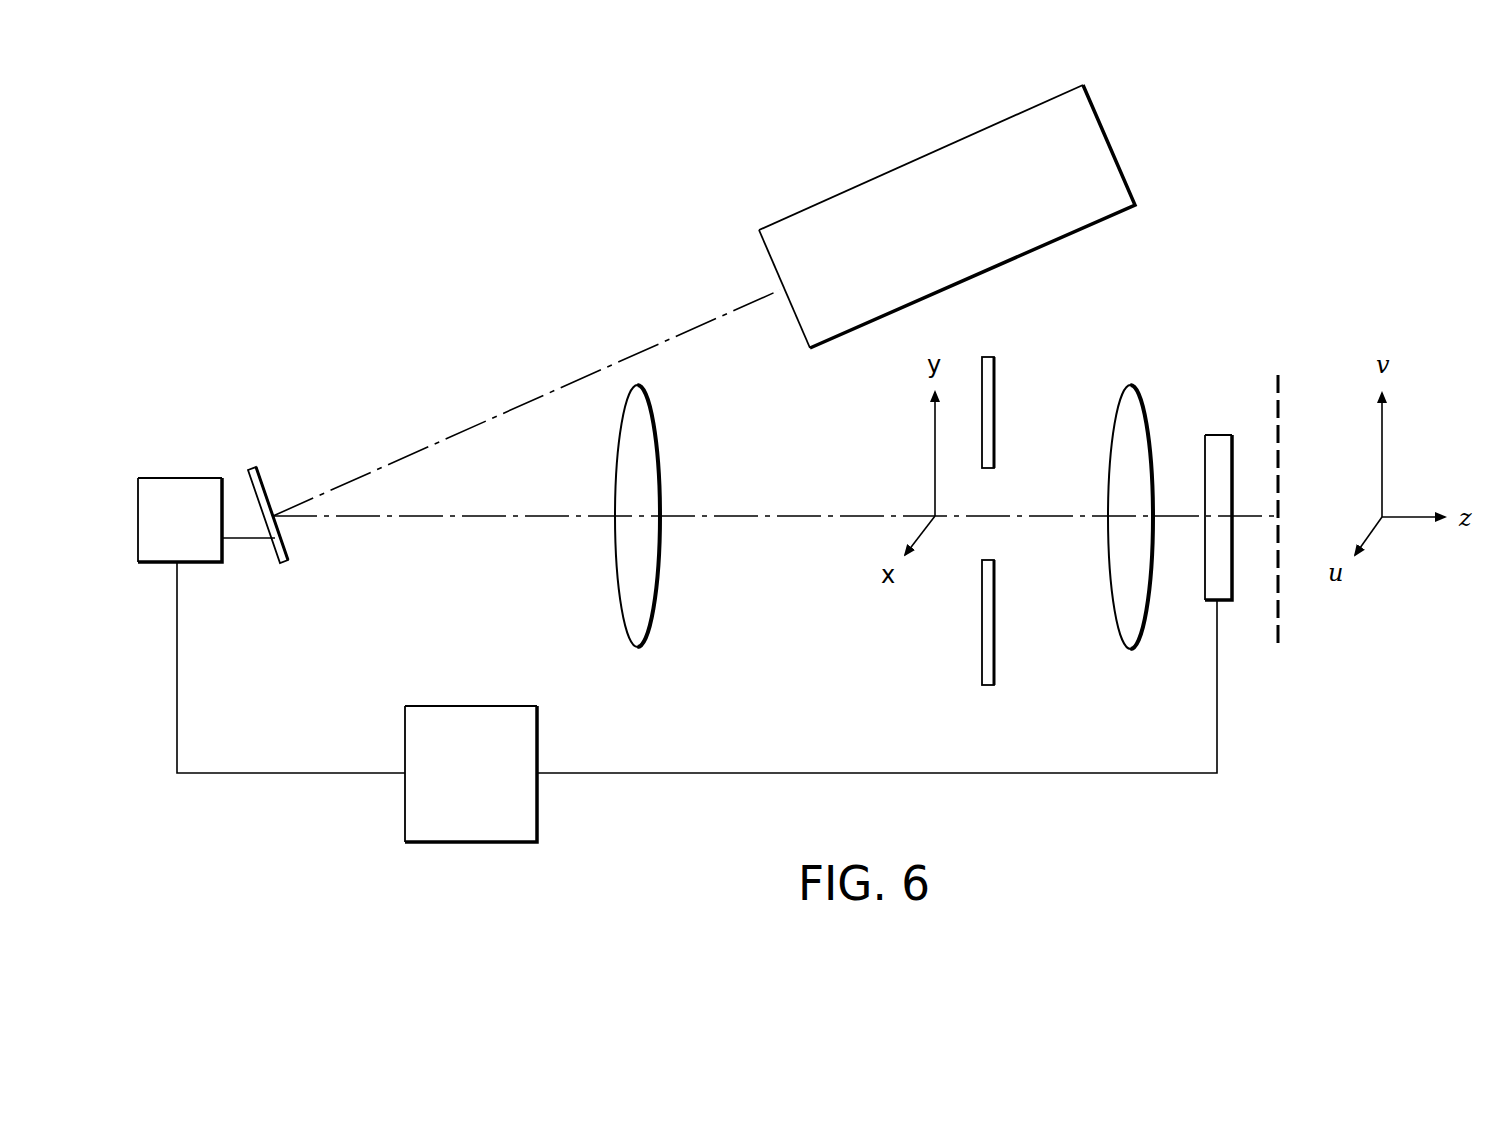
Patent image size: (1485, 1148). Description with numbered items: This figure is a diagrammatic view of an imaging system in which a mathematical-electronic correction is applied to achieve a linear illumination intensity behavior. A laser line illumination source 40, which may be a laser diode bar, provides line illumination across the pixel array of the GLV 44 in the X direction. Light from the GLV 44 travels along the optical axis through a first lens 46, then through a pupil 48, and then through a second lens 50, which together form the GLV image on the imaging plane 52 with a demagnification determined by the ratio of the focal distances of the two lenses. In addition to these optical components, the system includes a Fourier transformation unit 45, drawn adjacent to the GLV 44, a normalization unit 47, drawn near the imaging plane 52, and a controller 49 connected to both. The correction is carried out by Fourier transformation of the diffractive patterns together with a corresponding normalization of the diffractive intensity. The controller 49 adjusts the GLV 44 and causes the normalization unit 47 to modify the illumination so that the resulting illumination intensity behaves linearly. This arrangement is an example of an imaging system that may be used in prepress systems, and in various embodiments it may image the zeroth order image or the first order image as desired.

The laser line illumination source 40 is at (890, 168).
The GLV 44 is at (263, 482).
The Fourier transformation unit 45 is at (178, 478).
The first lens 46 is at (658, 430).
The normalization unit 47 is at (1203, 578).
The pupil 48 is at (995, 378).
The controller 49 is at (468, 705).
The second lens 50 is at (1145, 405).
The imaging plane 52 is at (1292, 385).